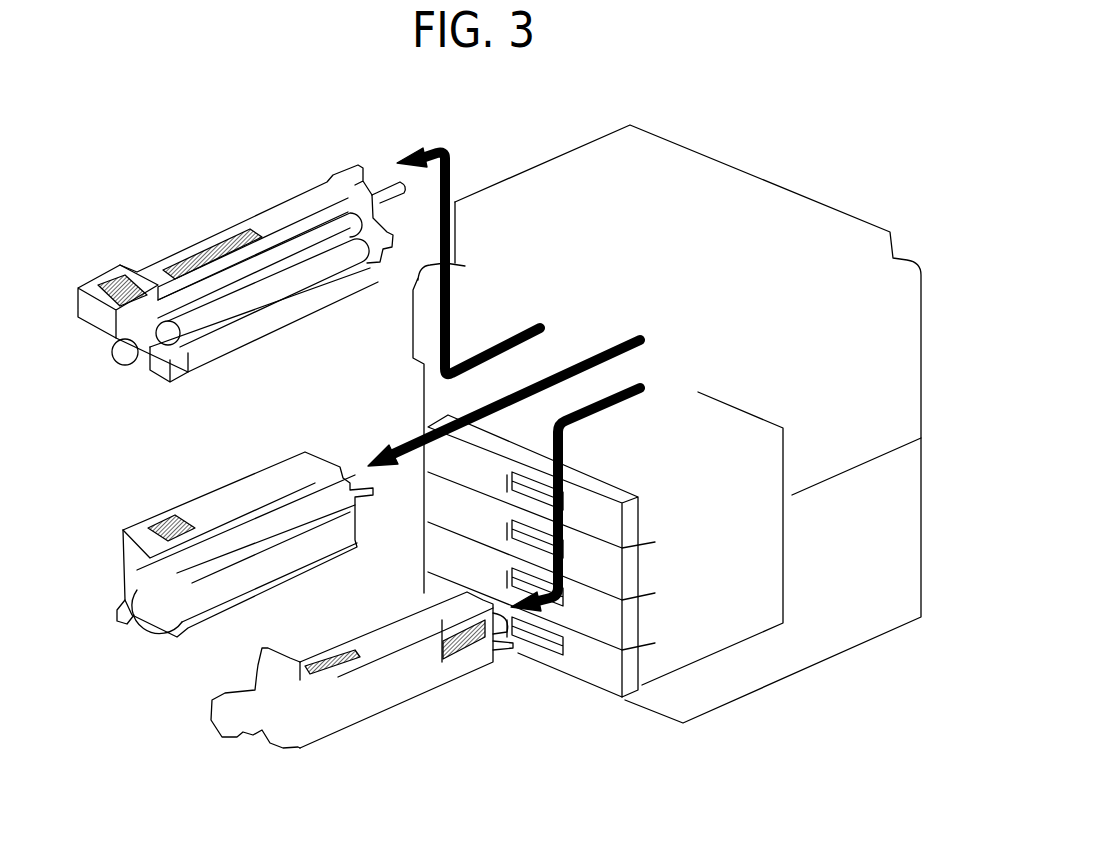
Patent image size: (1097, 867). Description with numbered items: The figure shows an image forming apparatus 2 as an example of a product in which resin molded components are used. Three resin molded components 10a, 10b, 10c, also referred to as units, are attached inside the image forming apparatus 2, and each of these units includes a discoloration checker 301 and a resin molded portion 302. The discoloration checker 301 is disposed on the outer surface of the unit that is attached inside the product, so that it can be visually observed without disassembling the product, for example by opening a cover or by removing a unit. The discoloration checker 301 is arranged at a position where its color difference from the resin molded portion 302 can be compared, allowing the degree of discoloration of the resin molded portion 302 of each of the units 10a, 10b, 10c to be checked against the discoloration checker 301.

The image forming apparatus 2 is at (842, 170).
The resin molded component 10a is at (299, 160).
The resin molded component 10b is at (331, 425).
The resin molded component 10c is at (393, 585).
The discoloration checker 301 is at (192, 260).
The resin molded portion 302 is at (255, 303).